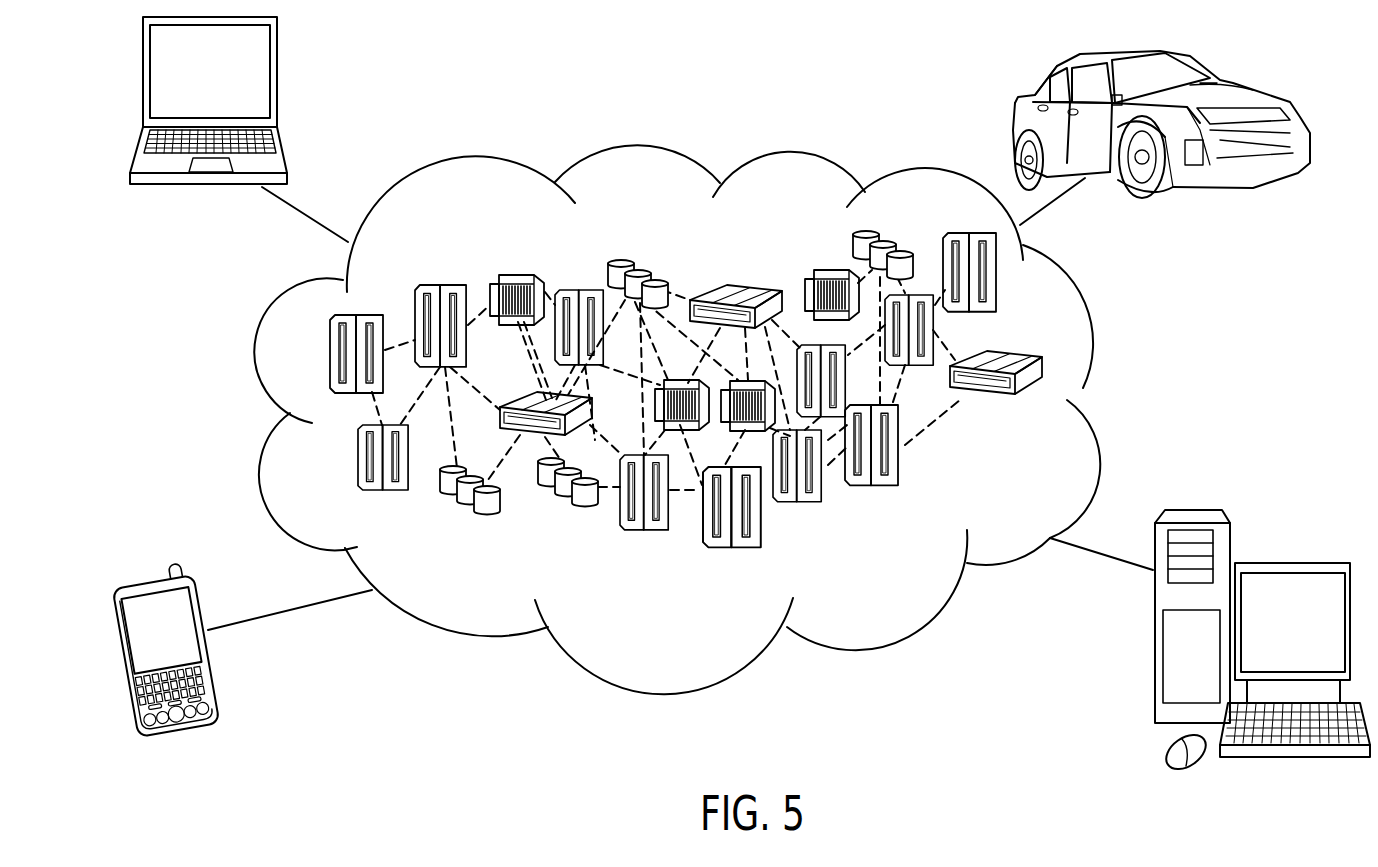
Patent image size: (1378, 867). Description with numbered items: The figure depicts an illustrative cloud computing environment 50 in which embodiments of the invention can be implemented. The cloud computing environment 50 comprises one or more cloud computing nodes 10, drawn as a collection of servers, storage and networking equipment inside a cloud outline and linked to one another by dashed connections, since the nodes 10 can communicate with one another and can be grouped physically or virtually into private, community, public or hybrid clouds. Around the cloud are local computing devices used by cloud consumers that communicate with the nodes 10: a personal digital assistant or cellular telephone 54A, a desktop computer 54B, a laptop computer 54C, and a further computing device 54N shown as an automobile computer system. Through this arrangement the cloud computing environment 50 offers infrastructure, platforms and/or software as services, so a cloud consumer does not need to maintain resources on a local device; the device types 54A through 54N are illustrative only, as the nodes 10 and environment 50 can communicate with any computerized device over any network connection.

The cloud computing nodes 10 is at (1058, 420).
The cloud computing environment 50 is at (1090, 322).
The personal digital assistant (PDA) or cellular telephone 54A is at (120, 660).
The desktop computer 54B is at (1285, 563).
The laptop computer 54C is at (143, 75).
The computing device 54N is at (1220, 70).